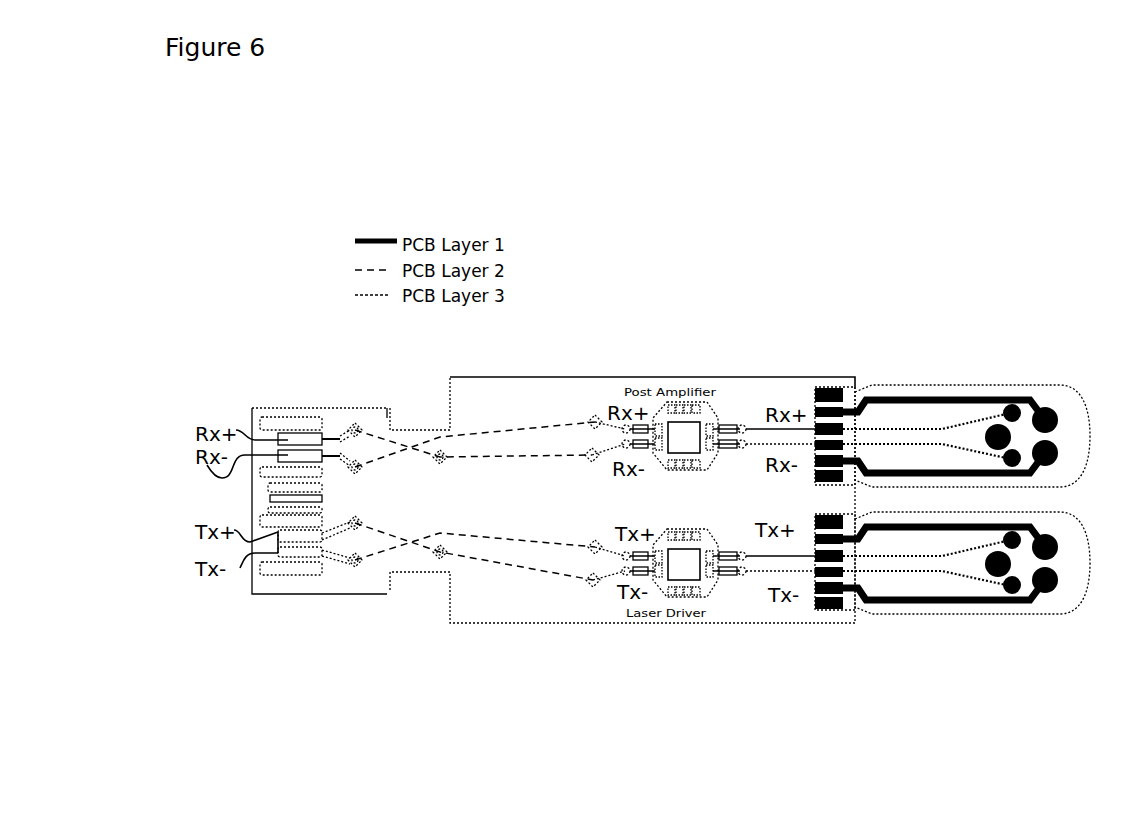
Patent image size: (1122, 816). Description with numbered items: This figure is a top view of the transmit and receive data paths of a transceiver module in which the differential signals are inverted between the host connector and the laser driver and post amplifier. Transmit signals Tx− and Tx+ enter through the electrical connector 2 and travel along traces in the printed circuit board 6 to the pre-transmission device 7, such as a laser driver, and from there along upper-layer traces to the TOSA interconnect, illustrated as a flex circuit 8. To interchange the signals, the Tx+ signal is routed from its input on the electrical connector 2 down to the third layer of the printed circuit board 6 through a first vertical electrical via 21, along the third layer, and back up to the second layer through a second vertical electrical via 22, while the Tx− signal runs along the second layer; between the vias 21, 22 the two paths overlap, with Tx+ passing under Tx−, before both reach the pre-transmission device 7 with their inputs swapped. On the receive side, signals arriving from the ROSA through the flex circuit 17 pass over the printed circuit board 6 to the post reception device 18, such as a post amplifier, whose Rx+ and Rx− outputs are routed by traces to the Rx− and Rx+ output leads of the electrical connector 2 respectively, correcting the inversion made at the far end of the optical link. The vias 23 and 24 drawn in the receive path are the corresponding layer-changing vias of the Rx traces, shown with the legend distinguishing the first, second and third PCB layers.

The electrical connector 2 is at (253, 408).
The printed circuit board 6 is at (531, 505).
The pre-transmission device 7 is at (690, 568).
The flex circuit 8 is at (1078, 593).
The flex circuit 17 is at (1053, 392).
The post reception device 18 is at (692, 428).
The first vertical electrical via 21 is at (354, 530).
The second vertical electrical via 22 is at (438, 558).
The receive via 23 is at (439, 450).
The receive via 24 is at (356, 423).